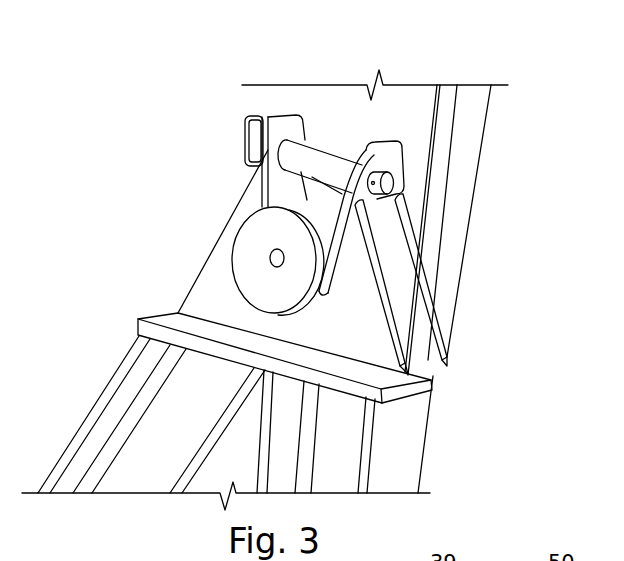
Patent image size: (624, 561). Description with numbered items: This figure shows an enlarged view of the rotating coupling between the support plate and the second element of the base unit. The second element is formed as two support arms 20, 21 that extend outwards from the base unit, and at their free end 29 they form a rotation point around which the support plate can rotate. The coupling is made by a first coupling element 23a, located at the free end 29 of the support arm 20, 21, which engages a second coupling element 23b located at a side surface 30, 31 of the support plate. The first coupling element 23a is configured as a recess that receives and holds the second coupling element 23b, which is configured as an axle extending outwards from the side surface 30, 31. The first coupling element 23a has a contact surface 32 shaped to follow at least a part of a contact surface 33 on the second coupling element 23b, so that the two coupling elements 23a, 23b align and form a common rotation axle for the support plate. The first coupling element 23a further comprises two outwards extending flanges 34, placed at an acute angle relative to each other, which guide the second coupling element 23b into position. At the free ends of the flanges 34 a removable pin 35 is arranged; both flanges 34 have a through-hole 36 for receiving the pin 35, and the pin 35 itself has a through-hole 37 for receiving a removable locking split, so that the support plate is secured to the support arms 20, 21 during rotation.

The support arm 20 is at (294, 414).
The support arm 21 is at (407, 435).
The first coupling element 23a is at (336, 284).
The second coupling element 23b is at (250, 250).
The free end 29 is at (200, 295).
The side surface 30 is at (375, 193).
The side surface 31 is at (412, 100).
The contact surface 32 is at (284, 184).
The contact surface 33 is at (323, 228).
The flange 34 is at (377, 157).
The pin 35 is at (287, 156).
The through-hole 36 is at (268, 132).
The through-hole 37 is at (362, 187).